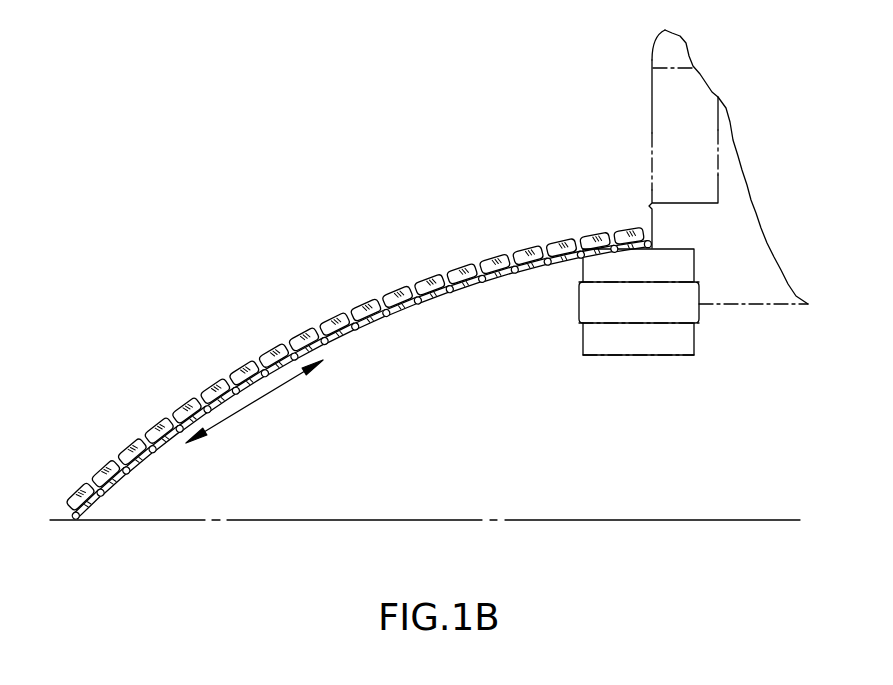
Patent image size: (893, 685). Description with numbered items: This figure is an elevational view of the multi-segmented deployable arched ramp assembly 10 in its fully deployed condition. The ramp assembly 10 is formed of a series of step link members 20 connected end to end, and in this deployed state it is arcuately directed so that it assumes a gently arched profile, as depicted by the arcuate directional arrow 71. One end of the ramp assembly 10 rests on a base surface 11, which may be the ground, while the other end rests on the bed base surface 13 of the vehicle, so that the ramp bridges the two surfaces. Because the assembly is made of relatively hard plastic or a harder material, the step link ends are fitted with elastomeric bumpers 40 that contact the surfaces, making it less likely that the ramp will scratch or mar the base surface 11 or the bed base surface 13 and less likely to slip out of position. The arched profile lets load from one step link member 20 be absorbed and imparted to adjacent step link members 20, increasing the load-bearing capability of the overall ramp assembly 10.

The multi-segmented deployable arched ramp assembly 10 is at (339, 374).
The base surface 11 is at (279, 521).
The bed base surface 13 is at (677, 246).
The step link member 20 is at (347, 329).
The elastomeric bumper 40 is at (72, 516).
The arcuate directional arrow 71 is at (262, 393).